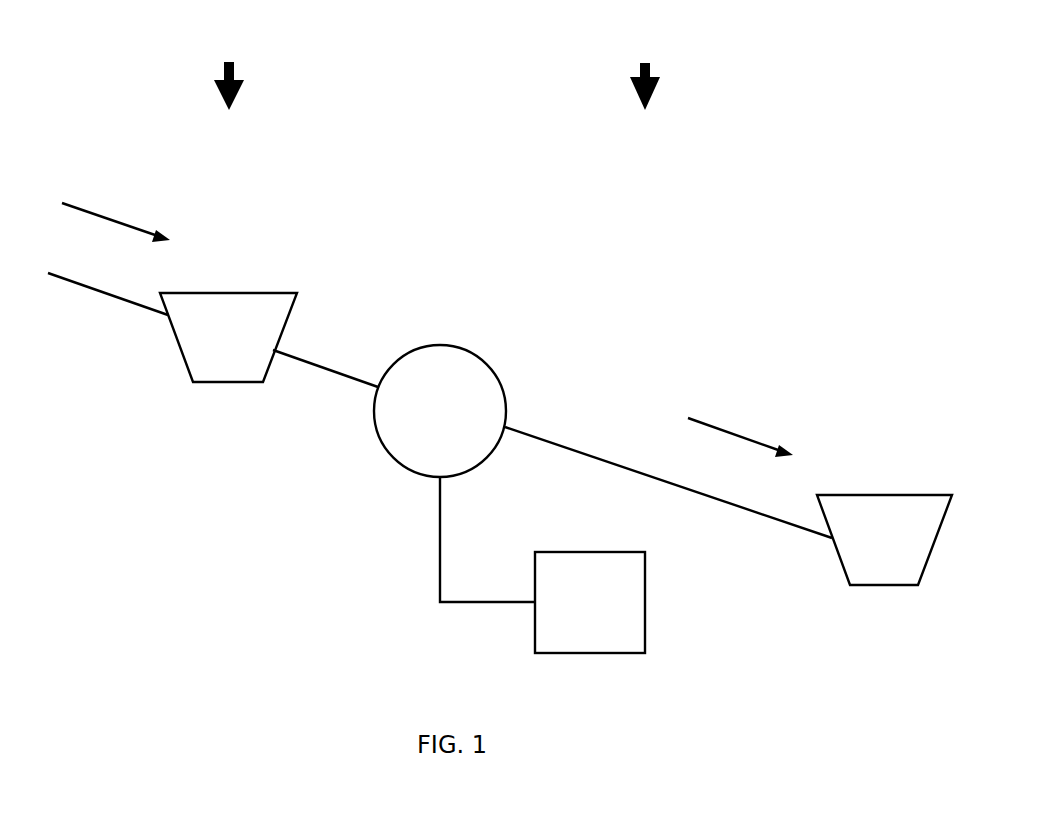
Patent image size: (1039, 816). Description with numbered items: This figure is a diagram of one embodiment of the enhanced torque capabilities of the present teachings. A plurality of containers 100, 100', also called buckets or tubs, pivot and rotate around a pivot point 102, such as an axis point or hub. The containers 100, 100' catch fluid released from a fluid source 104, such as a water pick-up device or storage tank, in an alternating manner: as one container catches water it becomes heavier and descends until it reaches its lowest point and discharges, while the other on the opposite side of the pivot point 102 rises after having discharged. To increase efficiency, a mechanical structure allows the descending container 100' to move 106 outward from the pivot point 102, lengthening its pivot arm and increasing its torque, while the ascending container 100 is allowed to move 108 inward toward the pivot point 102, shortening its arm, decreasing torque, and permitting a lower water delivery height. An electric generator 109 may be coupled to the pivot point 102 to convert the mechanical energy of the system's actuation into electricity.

The container 100 is at (235, 295).
The container 100' is at (898, 497).
The pivot point 102 is at (437, 362).
The fluid source 104 is at (615, 73).
The outward movement 106 is at (742, 433).
The inward movement 108 is at (120, 220).
The electric generator 109 is at (645, 602).